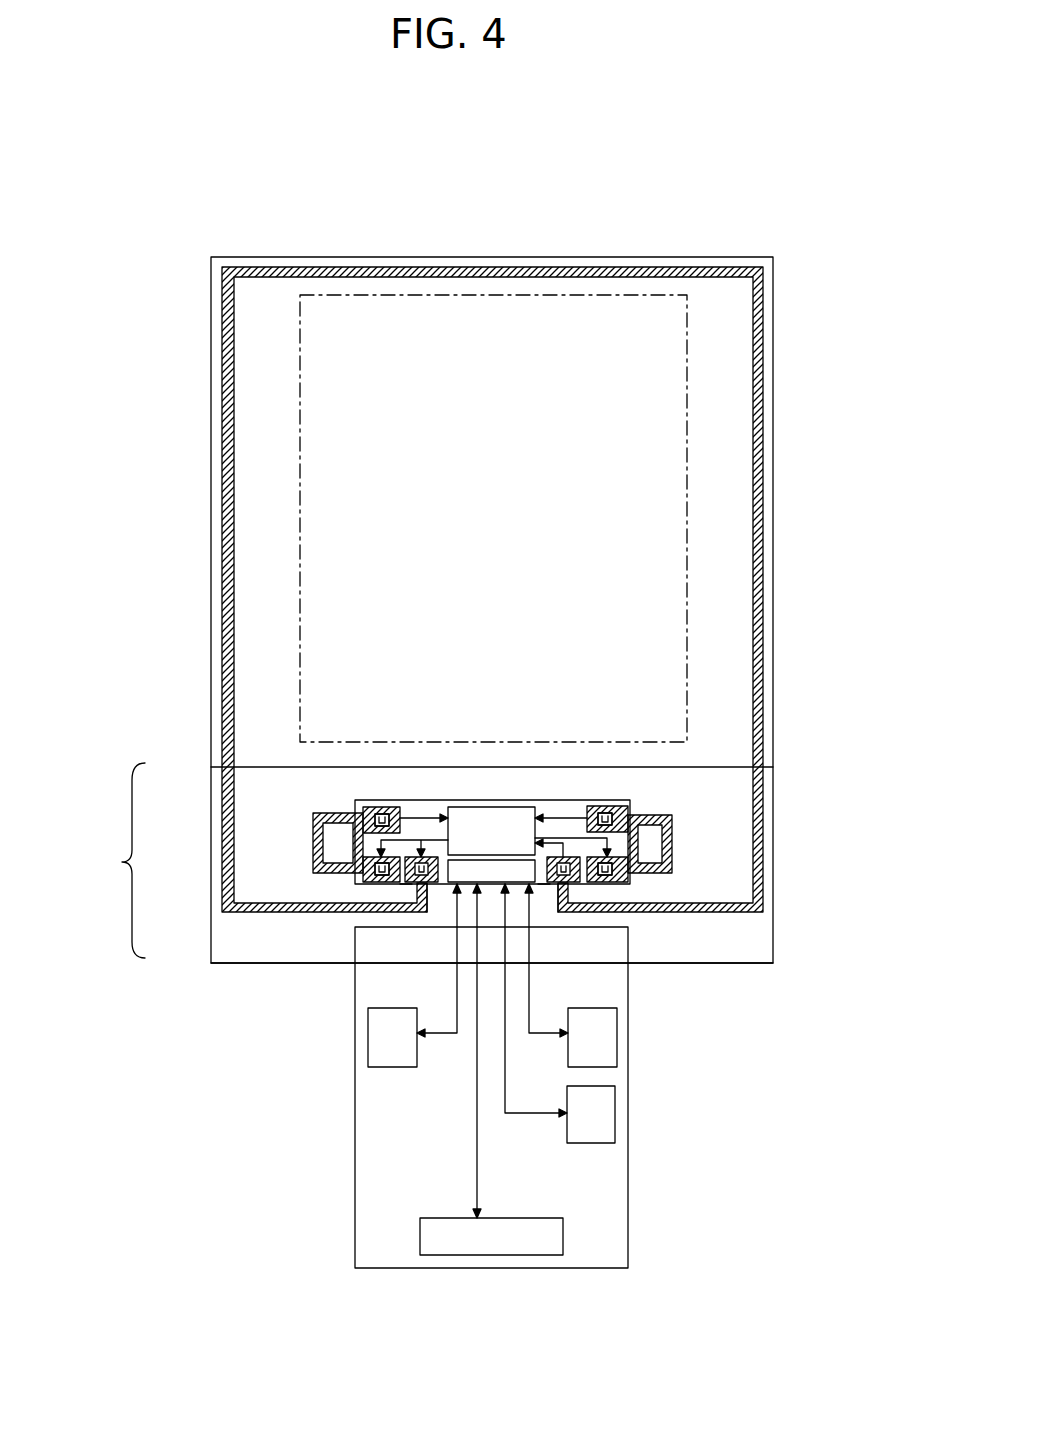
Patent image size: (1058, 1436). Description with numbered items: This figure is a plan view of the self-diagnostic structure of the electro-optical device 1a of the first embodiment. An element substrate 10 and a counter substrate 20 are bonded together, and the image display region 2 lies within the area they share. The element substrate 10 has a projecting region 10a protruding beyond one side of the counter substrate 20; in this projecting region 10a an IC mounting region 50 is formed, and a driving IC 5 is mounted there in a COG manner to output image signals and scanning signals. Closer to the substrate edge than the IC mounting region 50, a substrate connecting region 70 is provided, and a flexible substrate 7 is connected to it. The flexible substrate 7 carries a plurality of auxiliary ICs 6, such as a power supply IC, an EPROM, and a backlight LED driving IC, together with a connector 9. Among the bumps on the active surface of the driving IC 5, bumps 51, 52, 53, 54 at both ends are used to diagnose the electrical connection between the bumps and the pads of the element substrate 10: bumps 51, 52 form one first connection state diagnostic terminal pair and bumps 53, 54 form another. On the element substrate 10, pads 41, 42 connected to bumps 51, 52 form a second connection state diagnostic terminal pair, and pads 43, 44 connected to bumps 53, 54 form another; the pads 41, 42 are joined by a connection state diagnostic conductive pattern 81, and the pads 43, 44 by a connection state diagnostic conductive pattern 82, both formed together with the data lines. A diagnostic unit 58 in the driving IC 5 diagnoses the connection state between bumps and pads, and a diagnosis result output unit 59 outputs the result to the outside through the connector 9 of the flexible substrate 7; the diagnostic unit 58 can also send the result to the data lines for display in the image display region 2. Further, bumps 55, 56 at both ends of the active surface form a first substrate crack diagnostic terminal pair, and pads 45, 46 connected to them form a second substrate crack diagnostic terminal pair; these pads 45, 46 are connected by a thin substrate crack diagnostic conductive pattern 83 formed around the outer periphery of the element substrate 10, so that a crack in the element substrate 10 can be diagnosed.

The electro-optical device 1a is at (178, 205).
The image display region 2 is at (557, 292).
The driving IC 5 is at (634, 735).
The IC mounting region 50 is at (570, 800).
The auxiliary ICs 6 is at (380, 1037).
The flexible substrate 7 is at (355, 1192).
The connector 9 is at (512, 1238).
The element substrate 10 is at (767, 967).
The projecting region 10a is at (109, 860).
The counter substrate 20 is at (720, 768).
The pad 41 is at (388, 738).
The pad 42 is at (327, 804).
The pad 43 is at (656, 765).
The pad 44 is at (676, 935).
The pad 45 is at (407, 885).
The pad 46 is at (543, 888).
The bump 51 is at (382, 812).
The bump 52 is at (376, 862).
The bump 53 is at (607, 818).
The bump 54 is at (607, 870).
The bump 55 is at (420, 857).
The bump 56 is at (558, 857).
The diagnostic unit 58 is at (468, 807).
The diagnosis result output unit 59 is at (508, 860).
The substrate connecting region 70 is at (355, 940).
The connection state diagnostic conductive pattern 81 is at (313, 837).
The connection state diagnostic conductive pattern 82 is at (672, 843).
The substrate crack diagnostic conductive pattern 83 is at (410, 266).